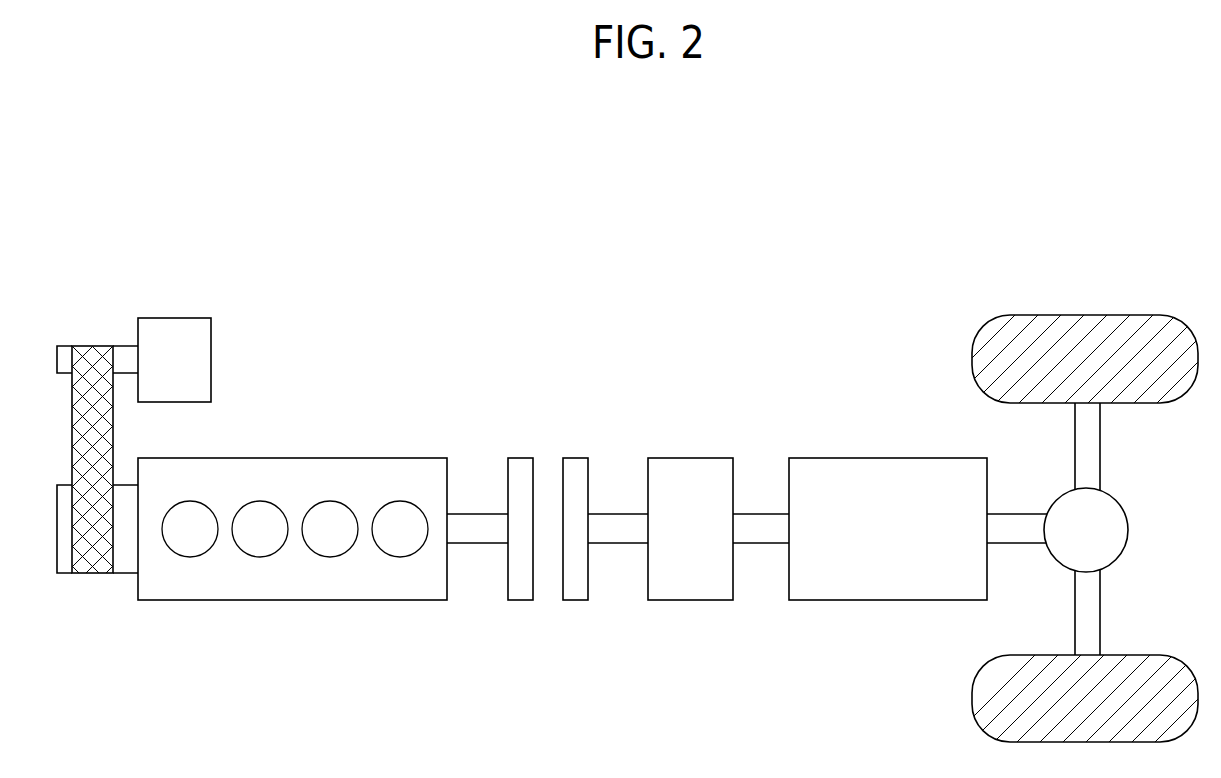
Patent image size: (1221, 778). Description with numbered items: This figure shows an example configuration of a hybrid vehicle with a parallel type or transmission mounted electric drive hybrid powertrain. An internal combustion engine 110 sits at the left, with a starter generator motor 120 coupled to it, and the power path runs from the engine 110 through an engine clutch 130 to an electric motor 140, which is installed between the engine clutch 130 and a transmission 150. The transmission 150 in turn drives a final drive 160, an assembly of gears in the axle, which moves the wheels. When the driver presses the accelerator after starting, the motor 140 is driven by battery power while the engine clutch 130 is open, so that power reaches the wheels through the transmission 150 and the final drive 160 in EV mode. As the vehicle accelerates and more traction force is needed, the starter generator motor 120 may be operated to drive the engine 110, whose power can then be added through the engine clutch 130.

The internal combustion engine 110 is at (393, 458).
The starter generator motor 120 is at (158, 318).
The engine clutch 130 is at (575, 458).
The electric motor 140 is at (683, 458).
The transmission 150 is at (942, 458).
The final drive 160 is at (1123, 503).